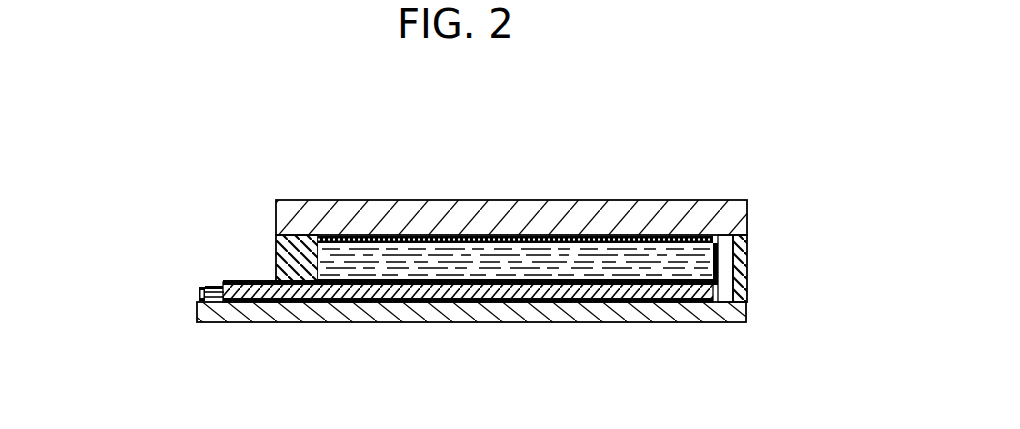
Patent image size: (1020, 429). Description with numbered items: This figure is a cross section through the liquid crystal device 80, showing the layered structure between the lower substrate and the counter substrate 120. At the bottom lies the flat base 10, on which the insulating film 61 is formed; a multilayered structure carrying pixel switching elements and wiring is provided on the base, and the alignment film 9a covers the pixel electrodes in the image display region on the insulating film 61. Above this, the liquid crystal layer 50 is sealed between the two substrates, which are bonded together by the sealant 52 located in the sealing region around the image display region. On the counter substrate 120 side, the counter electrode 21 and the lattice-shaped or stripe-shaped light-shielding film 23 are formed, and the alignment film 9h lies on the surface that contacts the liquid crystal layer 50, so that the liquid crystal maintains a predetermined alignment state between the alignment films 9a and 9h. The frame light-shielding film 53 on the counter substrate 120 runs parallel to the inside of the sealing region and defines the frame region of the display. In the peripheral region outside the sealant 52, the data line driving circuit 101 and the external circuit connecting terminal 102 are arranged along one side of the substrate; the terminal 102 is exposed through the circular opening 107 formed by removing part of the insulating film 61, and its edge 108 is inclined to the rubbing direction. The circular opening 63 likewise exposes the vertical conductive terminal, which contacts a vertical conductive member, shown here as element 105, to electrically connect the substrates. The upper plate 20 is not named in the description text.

The liquid crystal device 80 is at (60, 79).
The base 10 is at (545, 322).
The counter substrate 20 is at (415, 200).
The liquid crystal layer 50 is at (441, 267).
The sealant 52 is at (276, 245).
The frame light-shielding film 53 is at (330, 240).
The light-shielding film 23 is at (523, 240).
The alignment film 9h is at (560, 262).
The counter electrode 21 is at (605, 281).
The counter substrate 120 is at (674, 238).
The conductive member 105 is at (713, 268).
The insulating film 61 is at (735, 292).
The opening 63 is at (733, 302).
The alignment film 9a is at (386, 303).
The opening 107 is at (212, 286).
The data line driving circuit 101 is at (218, 289).
The external circuit connecting terminal 102 is at (207, 290).
The edge 108 is at (199, 293).